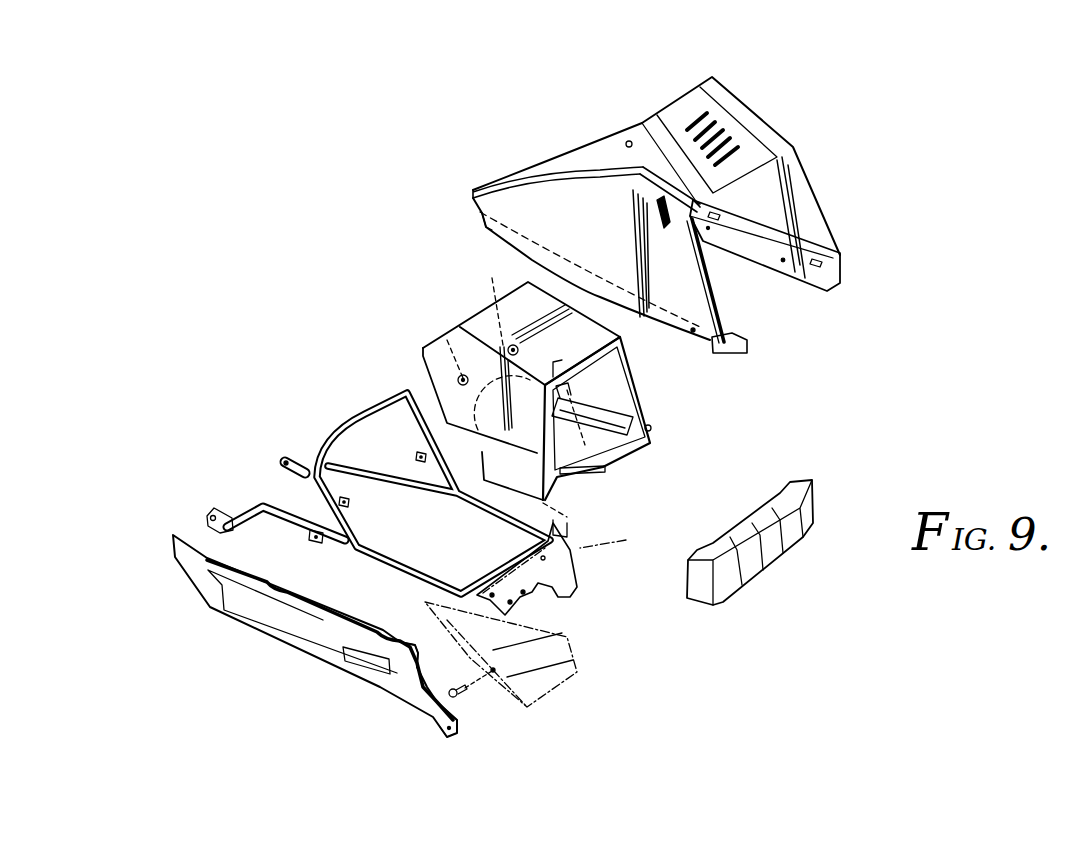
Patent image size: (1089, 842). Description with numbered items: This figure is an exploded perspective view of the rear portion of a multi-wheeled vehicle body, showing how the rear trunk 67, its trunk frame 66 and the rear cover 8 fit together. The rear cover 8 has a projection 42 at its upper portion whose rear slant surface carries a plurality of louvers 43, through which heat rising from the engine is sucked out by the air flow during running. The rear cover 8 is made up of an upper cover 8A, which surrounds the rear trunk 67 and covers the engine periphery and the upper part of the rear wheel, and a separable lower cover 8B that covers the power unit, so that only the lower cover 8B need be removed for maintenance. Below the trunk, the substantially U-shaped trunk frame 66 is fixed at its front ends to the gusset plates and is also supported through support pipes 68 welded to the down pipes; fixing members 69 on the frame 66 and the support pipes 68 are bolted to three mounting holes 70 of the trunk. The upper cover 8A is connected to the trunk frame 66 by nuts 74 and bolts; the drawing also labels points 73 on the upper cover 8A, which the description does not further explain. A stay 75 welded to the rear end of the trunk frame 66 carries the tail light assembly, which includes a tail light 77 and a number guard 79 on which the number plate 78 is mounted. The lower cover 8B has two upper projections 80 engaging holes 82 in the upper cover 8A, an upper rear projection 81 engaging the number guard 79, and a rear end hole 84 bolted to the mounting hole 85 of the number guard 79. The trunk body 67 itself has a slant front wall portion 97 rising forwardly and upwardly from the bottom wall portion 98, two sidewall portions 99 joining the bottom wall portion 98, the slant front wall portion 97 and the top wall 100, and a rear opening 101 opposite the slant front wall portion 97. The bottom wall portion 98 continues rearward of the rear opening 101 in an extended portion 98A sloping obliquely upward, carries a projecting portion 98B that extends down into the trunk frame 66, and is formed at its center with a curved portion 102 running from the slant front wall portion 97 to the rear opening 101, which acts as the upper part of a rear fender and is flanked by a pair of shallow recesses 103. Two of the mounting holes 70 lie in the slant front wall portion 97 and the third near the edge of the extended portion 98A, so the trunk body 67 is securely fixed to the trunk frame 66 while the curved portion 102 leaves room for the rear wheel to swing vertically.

The rear cover 8 is at (800, 143).
The upper cover 8A is at (822, 222).
The lower cover 8B is at (272, 637).
The projection 42 is at (695, 86).
The louvers 43 is at (723, 117).
The trunk frame 66 is at (263, 507).
The rear trunk 67 is at (458, 316).
The support pipes 68 is at (331, 443).
The fixing members 69 is at (417, 453).
The mounting holes 70 is at (630, 480).
The mounting holes 73 is at (620, 297).
The nuts 74 is at (316, 544).
The stay 75 is at (571, 604).
The tail light 77 is at (753, 520).
The number plate 78 is at (580, 660).
The number guard 79 is at (565, 690).
The upper projections 80 is at (277, 567).
The upper rear projection 81 is at (418, 650).
The holes 82 is at (598, 278).
The rear end hole 84 is at (447, 738).
The mounting hole 85 is at (493, 672).
The slant front wall portion 97 is at (567, 378).
The bottom wall portion 98 is at (630, 470).
The extended portion 98A is at (567, 470).
The projecting portion 98B is at (497, 470).
The sidewall portions 99 is at (443, 387).
The top wall 100 is at (623, 338).
The rear opening 101 is at (618, 385).
The curved portion 102 is at (547, 370).
The shallow recesses 103 is at (651, 429).